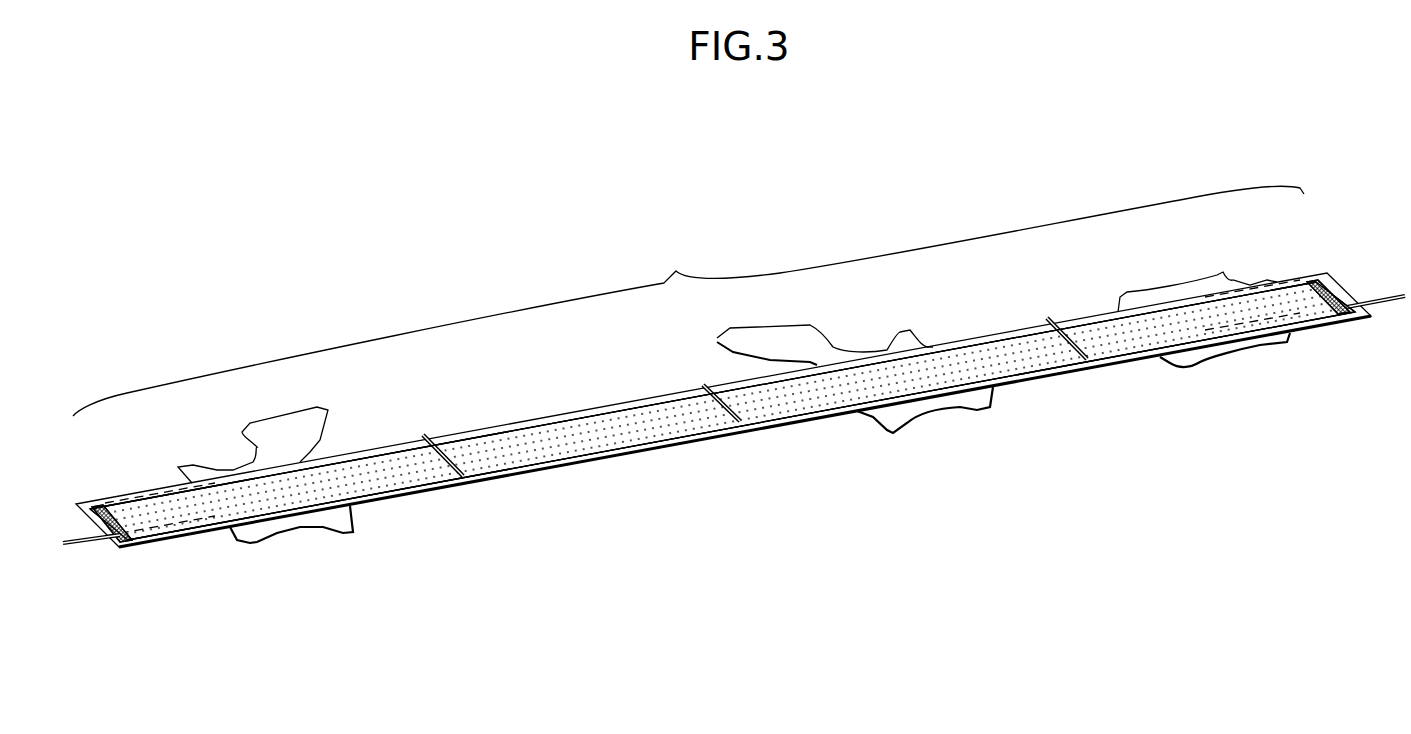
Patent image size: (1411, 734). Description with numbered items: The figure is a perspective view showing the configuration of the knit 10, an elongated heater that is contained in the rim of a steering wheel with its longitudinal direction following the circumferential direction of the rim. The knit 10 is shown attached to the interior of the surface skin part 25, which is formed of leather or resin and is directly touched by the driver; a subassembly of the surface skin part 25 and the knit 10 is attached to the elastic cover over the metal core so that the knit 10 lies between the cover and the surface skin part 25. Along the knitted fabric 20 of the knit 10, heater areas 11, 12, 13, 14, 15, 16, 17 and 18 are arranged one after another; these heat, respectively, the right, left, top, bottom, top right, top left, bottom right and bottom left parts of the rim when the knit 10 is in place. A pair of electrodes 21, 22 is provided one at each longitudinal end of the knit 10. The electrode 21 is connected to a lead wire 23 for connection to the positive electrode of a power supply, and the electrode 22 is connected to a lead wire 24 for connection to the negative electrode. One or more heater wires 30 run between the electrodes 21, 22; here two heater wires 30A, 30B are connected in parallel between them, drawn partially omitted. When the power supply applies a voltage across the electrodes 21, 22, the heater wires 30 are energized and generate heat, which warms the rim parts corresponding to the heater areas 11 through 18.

The knit 10 is at (78, 368).
The heater area 11 is at (1100, 335).
The heater area 12 is at (492, 447).
The heater area 13 is at (157, 512).
The heater area 14 is at (767, 400).
The heater area 15 is at (1300, 298).
The heater area 16 is at (380, 468).
The heater area 17 is at (1010, 357).
The heater area 18 is at (663, 418).
The knitted fabric 20 is at (688, 301).
The electrode 21 is at (117, 513).
The electrode 22 is at (1323, 283).
The lead wire 23 is at (78, 537).
The lead wire 24 is at (1372, 300).
The surface skin part 25 is at (898, 413).
The heater wire 30 is at (85, 612).
The heater wire 30A is at (125, 537).
The heater wire 30B is at (167, 523).